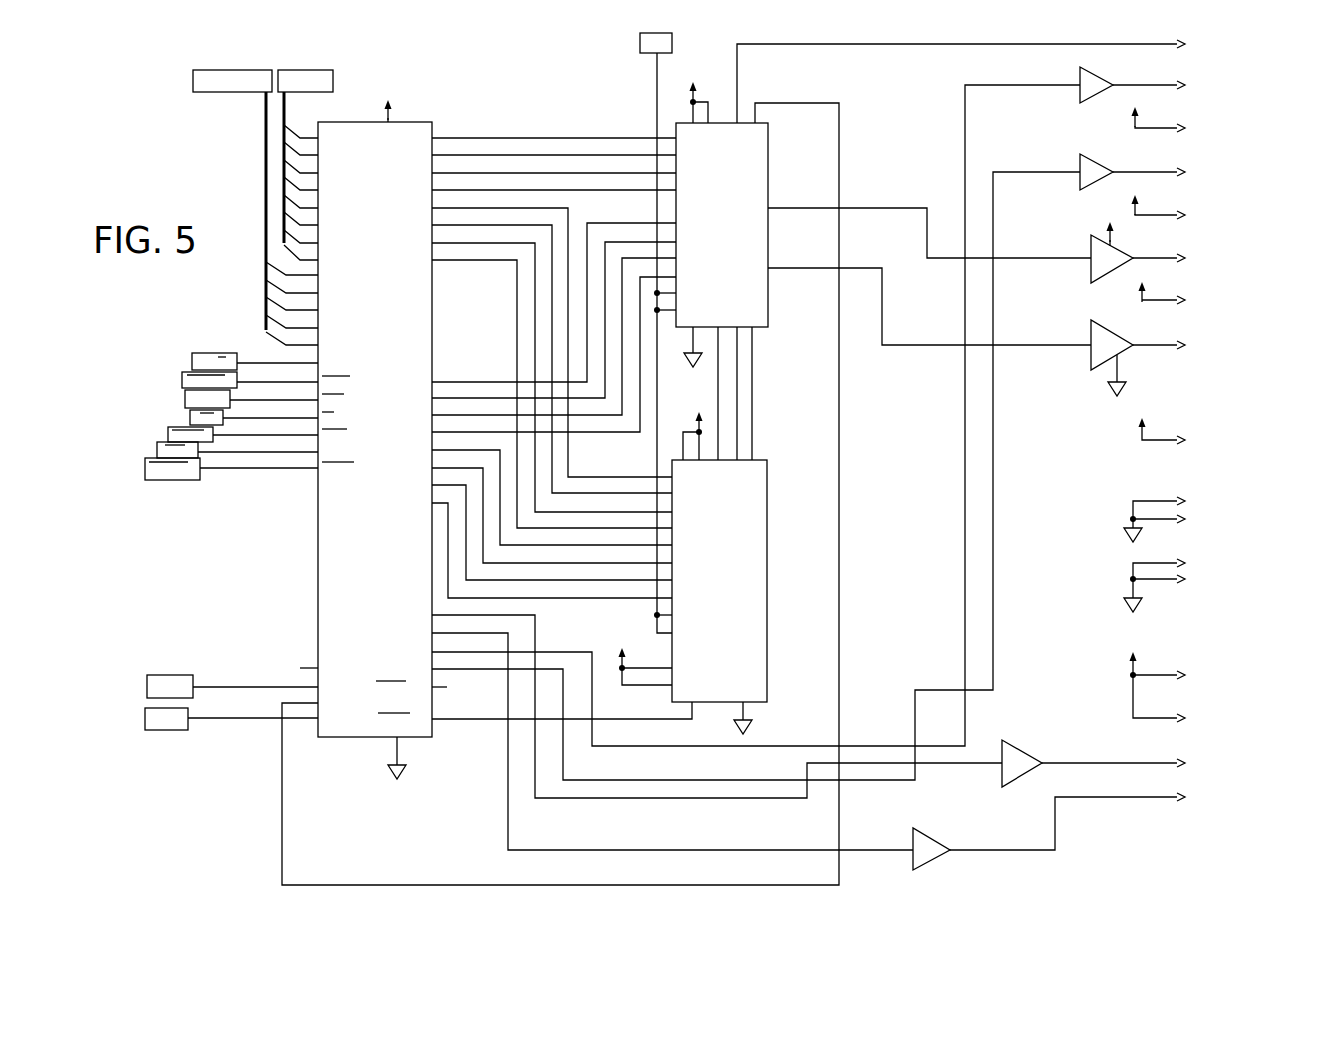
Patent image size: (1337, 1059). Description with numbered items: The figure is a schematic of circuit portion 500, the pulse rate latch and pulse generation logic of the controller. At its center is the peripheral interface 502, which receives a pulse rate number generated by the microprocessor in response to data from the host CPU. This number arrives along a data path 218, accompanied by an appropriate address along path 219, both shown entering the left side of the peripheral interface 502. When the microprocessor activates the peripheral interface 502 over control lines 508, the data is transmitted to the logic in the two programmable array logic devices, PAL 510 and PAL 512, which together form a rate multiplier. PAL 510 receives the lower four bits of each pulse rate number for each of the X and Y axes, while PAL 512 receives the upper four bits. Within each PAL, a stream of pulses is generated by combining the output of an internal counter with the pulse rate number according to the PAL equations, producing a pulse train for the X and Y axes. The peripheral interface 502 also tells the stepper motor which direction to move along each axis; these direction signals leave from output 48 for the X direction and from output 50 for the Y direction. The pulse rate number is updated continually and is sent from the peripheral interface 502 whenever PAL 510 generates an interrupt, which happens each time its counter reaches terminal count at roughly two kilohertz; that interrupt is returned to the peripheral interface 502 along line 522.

The circuit portion 500 is at (158, 122).
The peripheral interface 502 is at (423, 122).
The control lines 508 is at (258, 482).
The PAL 510 is at (770, 158).
The PAL 512 is at (770, 474).
The data path 218 is at (284, 113).
The address path 219 is at (266, 108).
The interrupt line 522 is at (839, 507).
The X direction output 48 is at (1091, 763).
The Y direction output 50 is at (1115, 797).